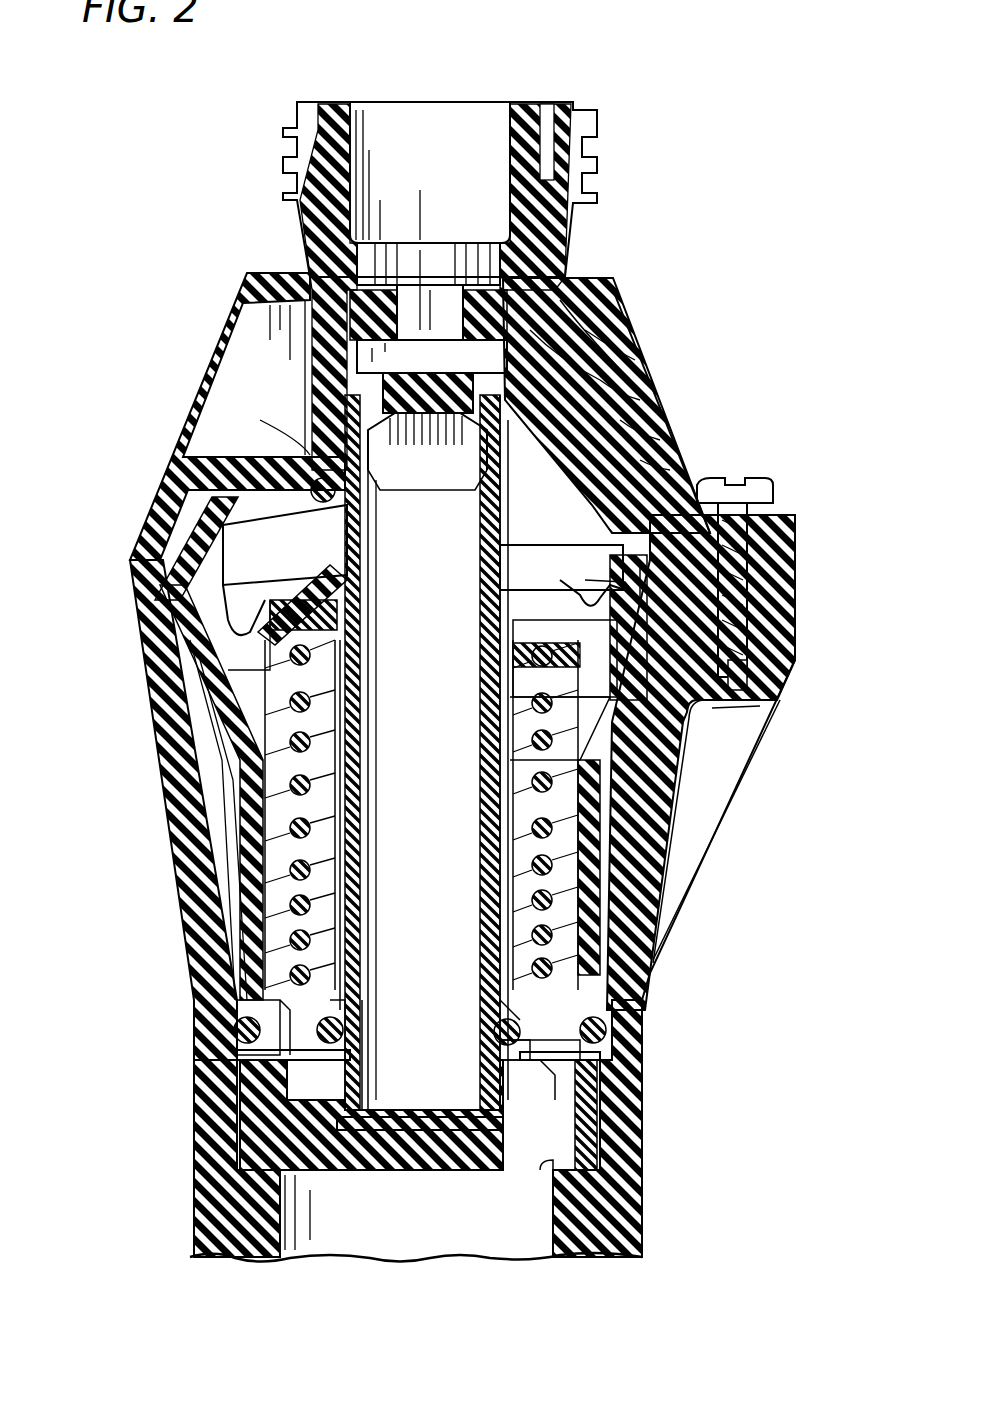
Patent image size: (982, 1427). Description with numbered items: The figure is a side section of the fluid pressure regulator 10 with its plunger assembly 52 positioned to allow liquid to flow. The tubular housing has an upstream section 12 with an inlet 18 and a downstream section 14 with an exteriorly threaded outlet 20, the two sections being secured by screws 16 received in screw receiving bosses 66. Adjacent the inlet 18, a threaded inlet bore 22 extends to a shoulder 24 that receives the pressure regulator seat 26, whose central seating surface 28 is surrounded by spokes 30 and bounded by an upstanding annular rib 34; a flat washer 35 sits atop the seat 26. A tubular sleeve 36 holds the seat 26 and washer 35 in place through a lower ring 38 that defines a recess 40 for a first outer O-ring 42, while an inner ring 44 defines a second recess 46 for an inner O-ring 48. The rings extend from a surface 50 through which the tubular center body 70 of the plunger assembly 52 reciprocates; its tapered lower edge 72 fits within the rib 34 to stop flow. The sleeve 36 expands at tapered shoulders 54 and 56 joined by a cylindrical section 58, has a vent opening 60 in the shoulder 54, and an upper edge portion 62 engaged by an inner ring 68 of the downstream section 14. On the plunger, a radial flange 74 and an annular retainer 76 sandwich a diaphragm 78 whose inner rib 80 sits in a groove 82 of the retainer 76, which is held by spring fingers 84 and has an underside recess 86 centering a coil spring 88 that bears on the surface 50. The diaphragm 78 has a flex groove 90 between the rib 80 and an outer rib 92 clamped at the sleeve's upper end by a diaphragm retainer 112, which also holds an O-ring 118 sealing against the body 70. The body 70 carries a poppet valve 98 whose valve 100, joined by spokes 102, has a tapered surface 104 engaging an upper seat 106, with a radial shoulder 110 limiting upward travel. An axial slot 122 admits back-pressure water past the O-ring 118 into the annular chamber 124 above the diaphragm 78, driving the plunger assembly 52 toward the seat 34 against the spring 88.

The fluid pressure regulator 10 is at (140, 245).
The upstream housing section 12 is at (722, 860).
The downstream housing section 14 is at (688, 436).
The screws 16 is at (790, 474).
The inlet 18 is at (445, 1245).
The outlet 20 is at (350, 98).
The threaded inlet bore 22 is at (540, 1245).
The shoulder 24 is at (615, 1150).
The pressure regulator seat 26 is at (415, 1180).
The seating surface 28 is at (460, 1170).
The webs or spokes 30 is at (600, 1185).
The annular peripheral rib 34 is at (418, 1100).
The flat washer 35 is at (605, 1055).
The tubular liner or sleeve 36 is at (220, 790).
The annular ring 38 is at (300, 1055).
The annular recess 40 is at (237, 1040).
The first outer O-ring 42 is at (240, 1020).
The inner ring 44 is at (540, 1060).
The second annular recess 46 is at (500, 1050).
The second inner O-ring 48 is at (495, 985).
The surface 50 is at (360, 985).
The plunger assembly 52 is at (372, 795).
The tapered shoulder 54 is at (152, 745).
The tapered shoulder 56 is at (155, 650).
The cylindrical section 58 is at (150, 684).
The opening 60 is at (720, 760).
The upper cylindrical edge portion 62 is at (160, 522).
The screw receiving bosses 66 is at (780, 630).
The inner annular ring 68 is at (150, 530).
The tubular center body 70 is at (500, 862).
The tapered lower edge 72 is at (355, 1105).
The radial flange 74 is at (312, 595).
The annular retainer 76 is at (270, 670).
The annular diaphragm 78 is at (605, 590).
The annular rib 80 is at (535, 580).
The annular groove 82 is at (560, 648).
The spring fingers 84 is at (305, 725).
The annular recess 86 is at (555, 688).
The coil spring 88 is at (550, 700).
The annular flex groove 90 is at (250, 592).
The outer annular rib 92 is at (200, 585).
The drain check or poppet valve 98 is at (455, 488).
The valve 100 is at (468, 362).
The webs or spokes 102 is at (300, 445).
The tapered annular valve surface 104 is at (590, 330).
The annular upper seat 106 is at (428, 300).
The radial shoulder 110 is at (305, 378).
The diaphragm retainer 112 is at (700, 475).
The O-ring 118 is at (640, 432).
The axial slot 122 is at (362, 520).
The annular chamber 124 is at (560, 578).